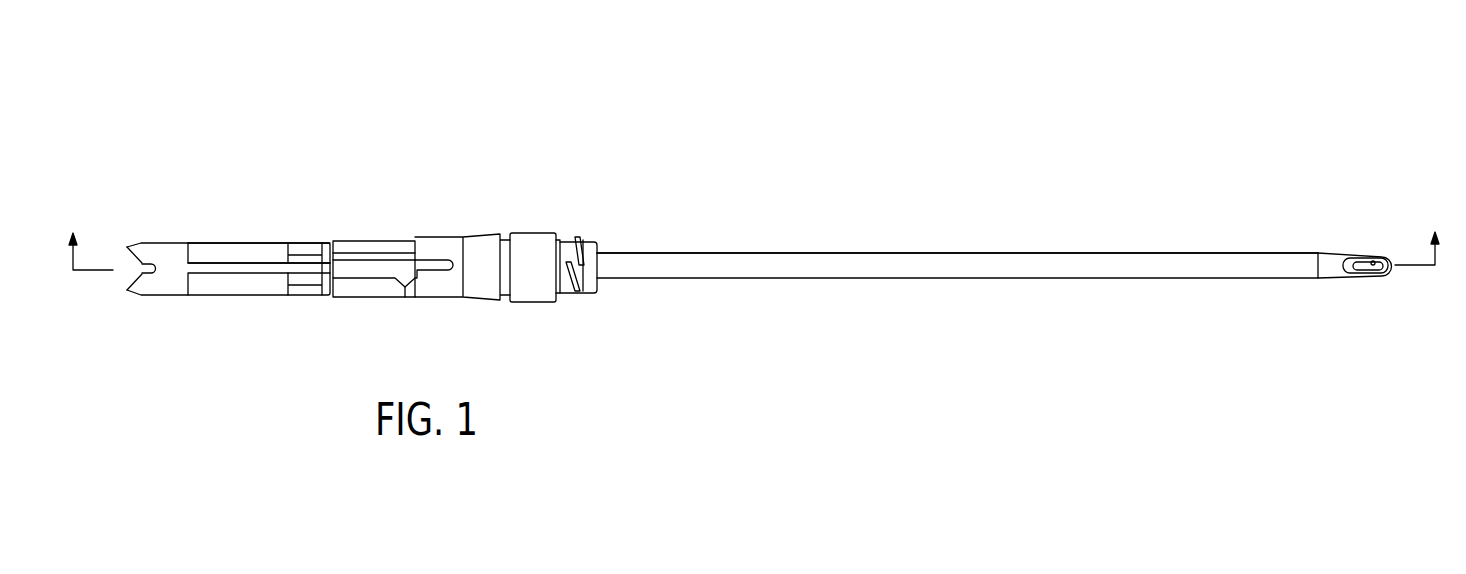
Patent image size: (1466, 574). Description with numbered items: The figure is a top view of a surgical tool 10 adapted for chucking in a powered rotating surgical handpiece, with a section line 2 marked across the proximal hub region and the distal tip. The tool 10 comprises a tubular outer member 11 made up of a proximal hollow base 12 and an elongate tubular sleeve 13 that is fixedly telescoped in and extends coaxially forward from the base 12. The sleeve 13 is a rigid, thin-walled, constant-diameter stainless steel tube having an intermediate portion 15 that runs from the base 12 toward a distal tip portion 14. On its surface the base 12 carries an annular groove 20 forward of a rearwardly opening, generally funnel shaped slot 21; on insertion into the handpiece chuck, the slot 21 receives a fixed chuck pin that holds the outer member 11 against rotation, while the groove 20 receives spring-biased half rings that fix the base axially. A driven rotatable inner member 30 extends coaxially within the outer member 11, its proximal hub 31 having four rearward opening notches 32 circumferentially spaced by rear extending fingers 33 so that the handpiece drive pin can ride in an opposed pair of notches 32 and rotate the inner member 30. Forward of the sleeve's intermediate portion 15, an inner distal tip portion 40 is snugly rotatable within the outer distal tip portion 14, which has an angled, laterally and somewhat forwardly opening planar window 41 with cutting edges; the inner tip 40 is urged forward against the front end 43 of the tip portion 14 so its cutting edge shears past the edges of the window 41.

The section line 2- 2 is at (753, 234).
The tool 10 is at (453, 132).
The tubular outer member 11 is at (355, 220).
The proximal hollow base 12 is at (450, 230).
The elongate tubular sleeve 13 is at (753, 248).
The distal tip portion 14 is at (1362, 252).
The intermediate portion 15 is at (705, 252).
The annular groove 20 is at (507, 245).
The funnel shaped slot 21 is at (424, 258).
The rotatable inner member 30 is at (287, 240).
The hub 31 is at (242, 240).
The notches 32 is at (142, 269).
The fingers 33 is at (128, 249).
The distal tip portion 40 is at (1376, 284).
The window 41 is at (1380, 257).
The front end 43 is at (1390, 273).